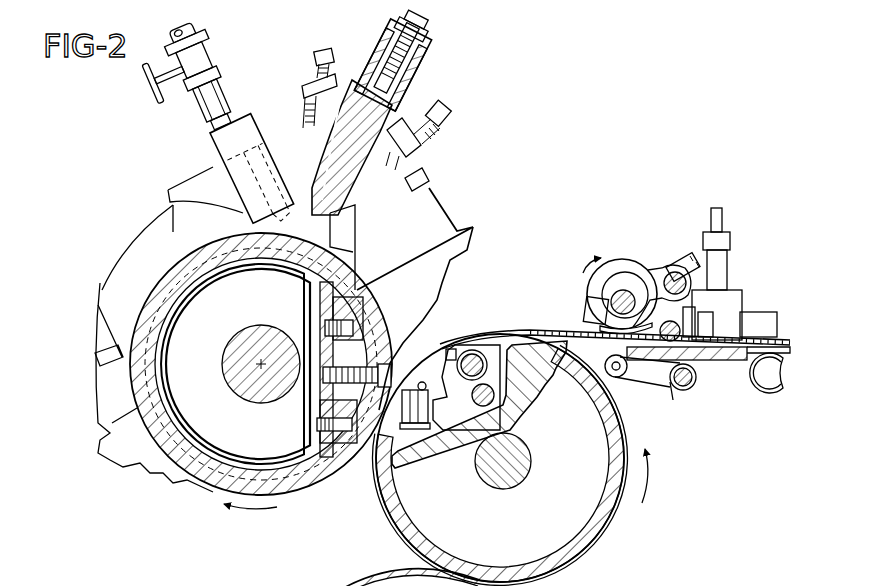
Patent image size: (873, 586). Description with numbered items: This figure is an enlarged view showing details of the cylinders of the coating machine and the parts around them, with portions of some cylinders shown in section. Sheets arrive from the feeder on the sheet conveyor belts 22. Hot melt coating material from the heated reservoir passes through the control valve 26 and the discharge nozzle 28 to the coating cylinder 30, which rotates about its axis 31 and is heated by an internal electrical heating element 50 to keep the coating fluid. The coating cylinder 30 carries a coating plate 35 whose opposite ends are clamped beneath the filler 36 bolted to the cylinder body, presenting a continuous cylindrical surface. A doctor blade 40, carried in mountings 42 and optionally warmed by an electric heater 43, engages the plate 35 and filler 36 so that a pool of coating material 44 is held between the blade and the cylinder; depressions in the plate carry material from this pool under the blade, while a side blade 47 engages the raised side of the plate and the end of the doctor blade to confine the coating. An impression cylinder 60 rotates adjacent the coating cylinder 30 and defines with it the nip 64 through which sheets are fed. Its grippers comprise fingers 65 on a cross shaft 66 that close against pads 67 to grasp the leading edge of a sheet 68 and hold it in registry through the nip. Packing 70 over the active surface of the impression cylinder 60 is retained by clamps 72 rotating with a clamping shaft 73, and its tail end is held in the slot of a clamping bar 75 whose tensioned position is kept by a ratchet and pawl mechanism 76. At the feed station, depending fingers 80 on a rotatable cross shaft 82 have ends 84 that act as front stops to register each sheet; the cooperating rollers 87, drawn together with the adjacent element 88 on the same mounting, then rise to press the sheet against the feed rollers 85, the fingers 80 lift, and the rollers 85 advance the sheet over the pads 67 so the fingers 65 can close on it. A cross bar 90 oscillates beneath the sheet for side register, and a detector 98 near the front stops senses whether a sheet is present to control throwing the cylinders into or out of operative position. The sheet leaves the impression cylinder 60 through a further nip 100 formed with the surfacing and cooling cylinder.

The sheet conveyor belts 22 is at (768, 393).
The control valve 26 is at (205, 57).
The discharge nozzle 28 is at (213, 143).
The coating cylinder 30 is at (142, 392).
The axis 31 is at (261, 363).
The coating plate 35 is at (147, 293).
The filler 36 is at (377, 327).
The doctor blade 40 is at (283, 182).
The mountings 42 is at (422, 93).
The electric heater 43 is at (298, 132).
The pool of coating material 44 is at (262, 225).
The side blades 47 is at (345, 247).
The internal electrical heating element 50 is at (163, 360).
The impression cylinder 60 is at (590, 543).
The nip 64 is at (401, 369).
The fingers 65 is at (488, 327).
The cross shaft 66 is at (468, 350).
The pads 67 is at (508, 345).
The sheet 68 is at (530, 330).
The packing 70 is at (630, 513).
The clamps 72 is at (513, 354).
The clamping shaft 73 is at (460, 440).
The clamping bar 75 is at (417, 450).
The ratchet and pawl mechanism 76 is at (414, 373).
The fingers 80 is at (650, 270).
The rotatable cross shaft 82 is at (673, 270).
The ends of the fingers 84 is at (597, 330).
The feed rollers 85 is at (626, 265).
The cooperating rollers 87 is at (618, 377).
The roller 88 is at (668, 382).
The cross bar 90 is at (707, 362).
The detector 98 is at (588, 298).
The nip 100 is at (410, 566).